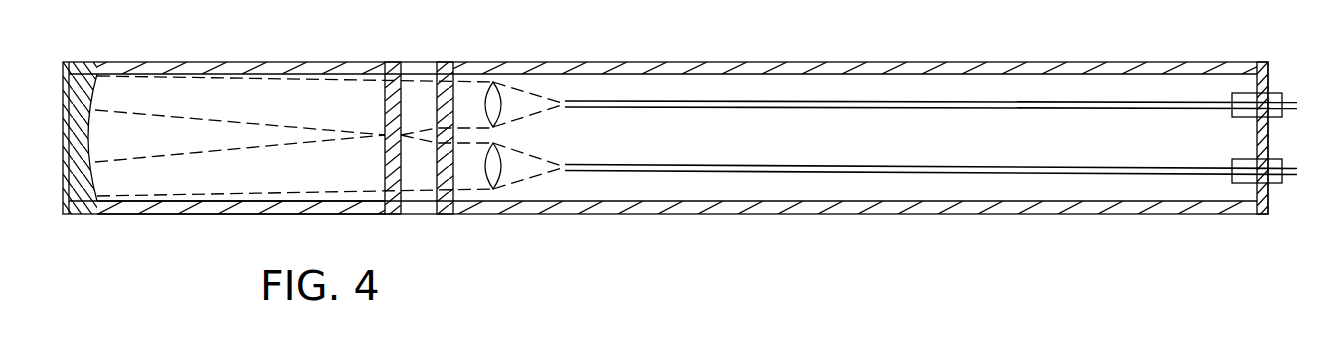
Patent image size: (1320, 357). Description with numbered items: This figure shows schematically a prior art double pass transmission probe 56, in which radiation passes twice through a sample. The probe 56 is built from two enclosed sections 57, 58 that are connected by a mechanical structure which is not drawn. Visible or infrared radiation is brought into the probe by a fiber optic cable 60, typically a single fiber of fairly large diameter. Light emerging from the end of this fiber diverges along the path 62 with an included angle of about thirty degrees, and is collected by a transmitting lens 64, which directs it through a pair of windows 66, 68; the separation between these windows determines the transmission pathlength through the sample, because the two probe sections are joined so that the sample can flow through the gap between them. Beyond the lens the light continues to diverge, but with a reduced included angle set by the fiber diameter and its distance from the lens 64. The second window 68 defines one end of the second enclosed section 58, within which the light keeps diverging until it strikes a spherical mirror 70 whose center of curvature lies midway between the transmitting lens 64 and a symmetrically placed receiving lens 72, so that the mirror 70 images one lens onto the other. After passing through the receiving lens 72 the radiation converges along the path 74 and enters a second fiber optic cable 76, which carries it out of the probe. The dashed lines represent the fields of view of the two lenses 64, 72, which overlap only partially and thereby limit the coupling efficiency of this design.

The probe 56 is at (755, 213).
The first enclosed section 57 is at (933, 214).
The second enclosed section 58 is at (240, 213).
The fiber optic cable 60 is at (832, 107).
The diverging light path 62 is at (550, 98).
The transmitting lens 64 is at (500, 93).
The first window 66 is at (427, 87).
The second window 68 is at (415, 87).
The mirror 70 is at (70, 148).
The receiving lens 72 is at (488, 183).
The converging light path 74 is at (522, 182).
The fiber optic cable 76 is at (805, 172).